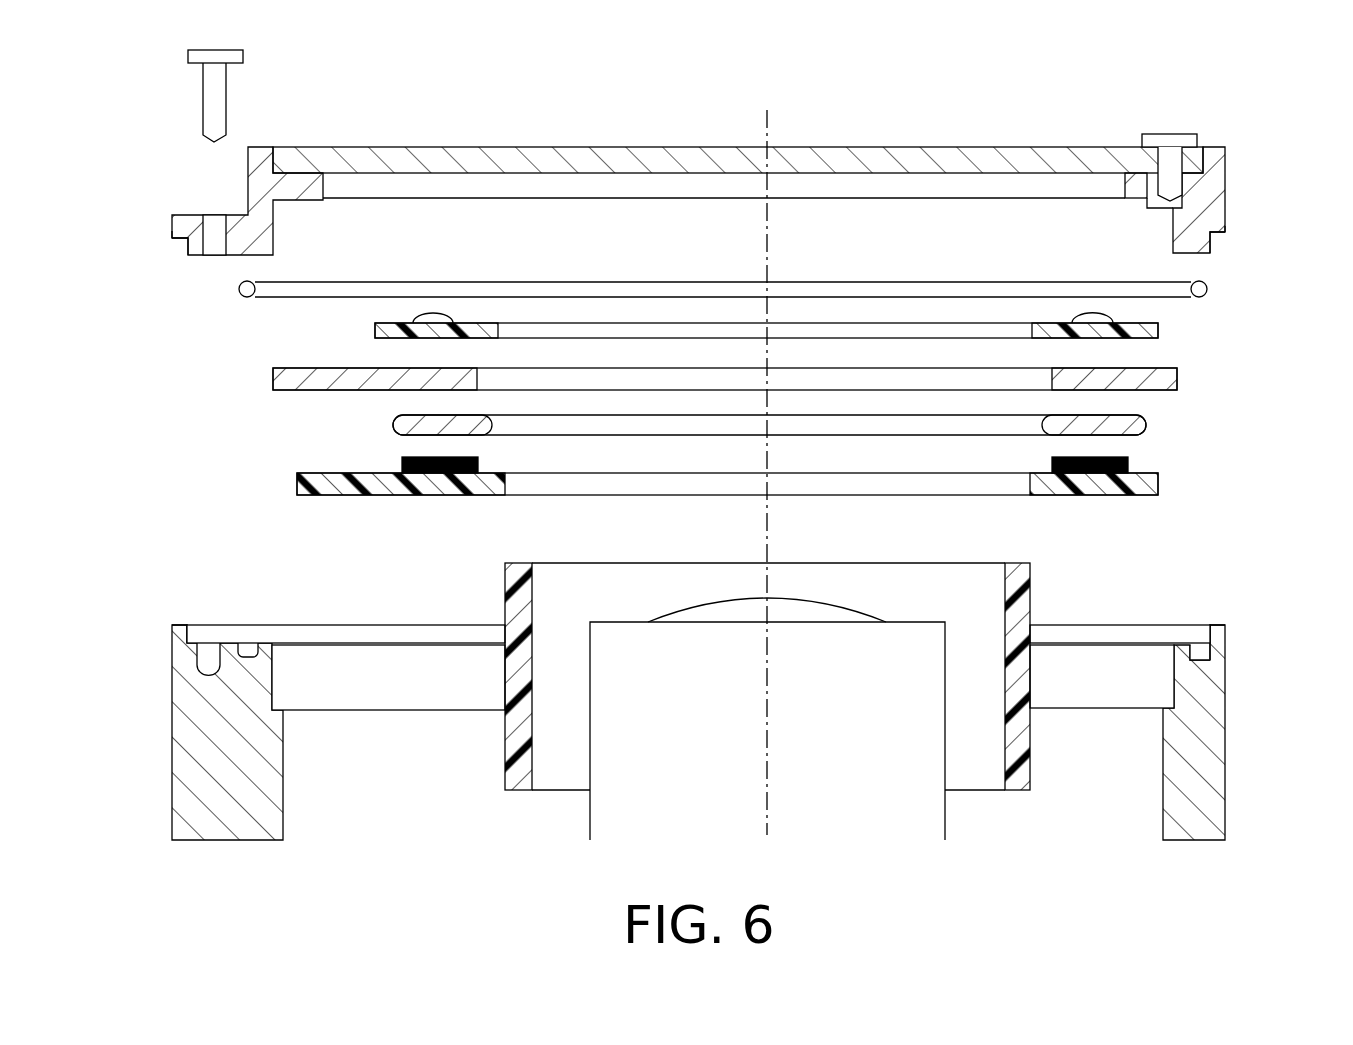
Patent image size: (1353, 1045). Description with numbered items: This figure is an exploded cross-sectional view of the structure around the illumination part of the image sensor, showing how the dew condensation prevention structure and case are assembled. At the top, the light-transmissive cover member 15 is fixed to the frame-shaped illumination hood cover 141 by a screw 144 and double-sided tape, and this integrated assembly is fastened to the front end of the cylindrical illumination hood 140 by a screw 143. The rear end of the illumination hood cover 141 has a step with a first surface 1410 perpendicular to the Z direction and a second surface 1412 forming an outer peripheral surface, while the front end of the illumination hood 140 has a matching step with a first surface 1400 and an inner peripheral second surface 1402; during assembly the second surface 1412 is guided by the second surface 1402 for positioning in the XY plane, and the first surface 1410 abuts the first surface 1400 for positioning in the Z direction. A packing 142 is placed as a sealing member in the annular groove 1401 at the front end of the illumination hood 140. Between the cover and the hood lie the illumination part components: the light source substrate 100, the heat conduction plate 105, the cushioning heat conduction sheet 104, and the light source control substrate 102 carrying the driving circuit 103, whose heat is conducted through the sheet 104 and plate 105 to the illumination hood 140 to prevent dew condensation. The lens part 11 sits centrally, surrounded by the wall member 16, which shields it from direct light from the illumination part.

The lens part 11 is at (598, 803).
The cover member 15 is at (600, 148).
The wall member 16 is at (505, 755).
The light source substrate 100 is at (375, 328).
The light source control substrate 102 is at (297, 486).
The driving circuit 103 is at (402, 465).
The heat conduction sheet 104 is at (393, 425).
The heat conduction plate 105 is at (273, 382).
The illumination hood 140 is at (186, 747).
The first surface 1400 is at (181, 626).
The groove 1401 is at (241, 652).
The second surface 1402 is at (188, 631).
The illumination hood cover 141 is at (190, 222).
The first surface 1410 is at (178, 246).
The second surface 1412 is at (180, 250).
The packing 142 is at (240, 290).
The screw 143 is at (203, 77).
The screw 144 is at (1165, 142).